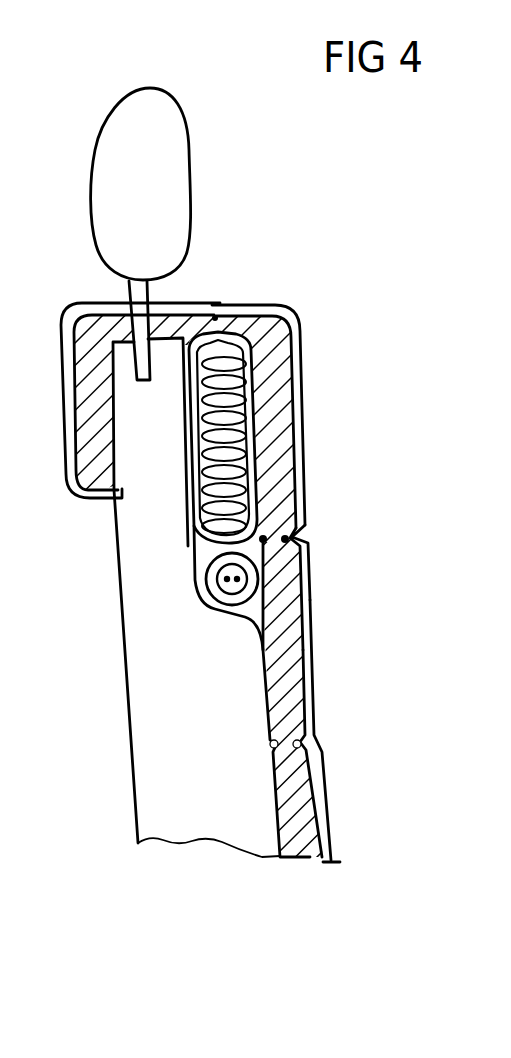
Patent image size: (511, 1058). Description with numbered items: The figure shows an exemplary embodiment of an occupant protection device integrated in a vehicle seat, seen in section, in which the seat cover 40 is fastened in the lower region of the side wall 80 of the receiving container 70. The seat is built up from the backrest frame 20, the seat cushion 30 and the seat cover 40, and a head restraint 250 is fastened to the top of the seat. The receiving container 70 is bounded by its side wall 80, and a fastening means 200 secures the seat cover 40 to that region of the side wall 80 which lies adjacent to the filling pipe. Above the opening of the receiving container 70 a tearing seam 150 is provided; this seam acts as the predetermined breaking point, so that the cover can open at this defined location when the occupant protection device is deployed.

The backrest frame 20 is at (225, 792).
The seat cushion 30 is at (313, 820).
The seat cover 40 is at (343, 780).
The receiving container 70 is at (268, 553).
The side wall 80 is at (260, 435).
The tearing seam 150 is at (217, 290).
The fastening means 200 is at (315, 537).
The head restraint 250 is at (162, 160).